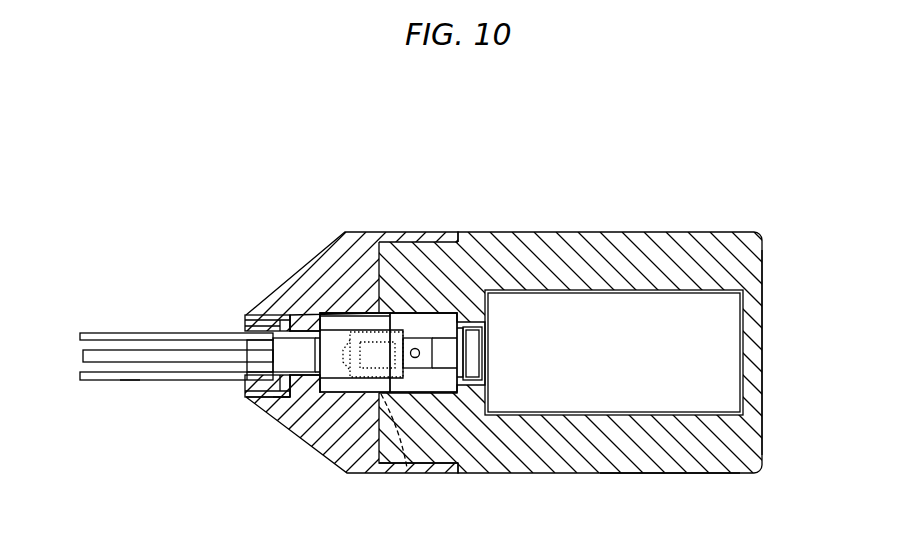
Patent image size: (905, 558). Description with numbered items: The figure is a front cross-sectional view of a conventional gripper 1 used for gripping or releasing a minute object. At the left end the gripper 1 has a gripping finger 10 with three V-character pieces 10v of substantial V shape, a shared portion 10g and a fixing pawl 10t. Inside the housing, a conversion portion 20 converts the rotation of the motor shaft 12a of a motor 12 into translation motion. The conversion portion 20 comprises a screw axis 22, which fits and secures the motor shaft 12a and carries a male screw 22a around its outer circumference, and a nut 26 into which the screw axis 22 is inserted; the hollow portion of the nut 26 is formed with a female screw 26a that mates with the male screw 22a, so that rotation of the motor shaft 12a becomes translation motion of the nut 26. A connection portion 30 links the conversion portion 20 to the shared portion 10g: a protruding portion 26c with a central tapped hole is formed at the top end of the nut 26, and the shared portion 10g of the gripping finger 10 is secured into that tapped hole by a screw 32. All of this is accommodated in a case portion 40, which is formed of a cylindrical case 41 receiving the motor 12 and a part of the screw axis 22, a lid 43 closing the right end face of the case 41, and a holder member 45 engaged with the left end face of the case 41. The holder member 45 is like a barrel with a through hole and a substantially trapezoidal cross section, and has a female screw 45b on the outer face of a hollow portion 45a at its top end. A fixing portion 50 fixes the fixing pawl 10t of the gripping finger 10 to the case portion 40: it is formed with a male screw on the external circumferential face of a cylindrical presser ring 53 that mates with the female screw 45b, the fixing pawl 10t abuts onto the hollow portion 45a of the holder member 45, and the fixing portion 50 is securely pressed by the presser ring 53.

The gripper 1 is at (600, 167).
The gripping finger 10 is at (102, 333).
The shared portion 10g is at (247, 376).
The V-character pieces 10v is at (130, 382).
The fixing pawl 10t is at (284, 398).
The motor 12 is at (578, 300).
The motor shaft 12a is at (450, 380).
The conversion portion 20 is at (345, 316).
The screw axis 22 is at (412, 338).
The male screw 22a is at (407, 468).
The nut 26 is at (340, 394).
The female screw 26a is at (370, 380).
The protruding portion 26c is at (324, 328).
The connection portion 30 is at (296, 359).
The screw 32 is at (268, 352).
The case portion 40 is at (673, 478).
The case 41 is at (679, 232).
The lid 43 is at (763, 340).
The holder member 45 is at (340, 237).
The hollow portion 45a is at (292, 316).
The female screw 45b is at (291, 390).
The fixing portion 50 is at (243, 310).
The presser ring 53 is at (246, 324).